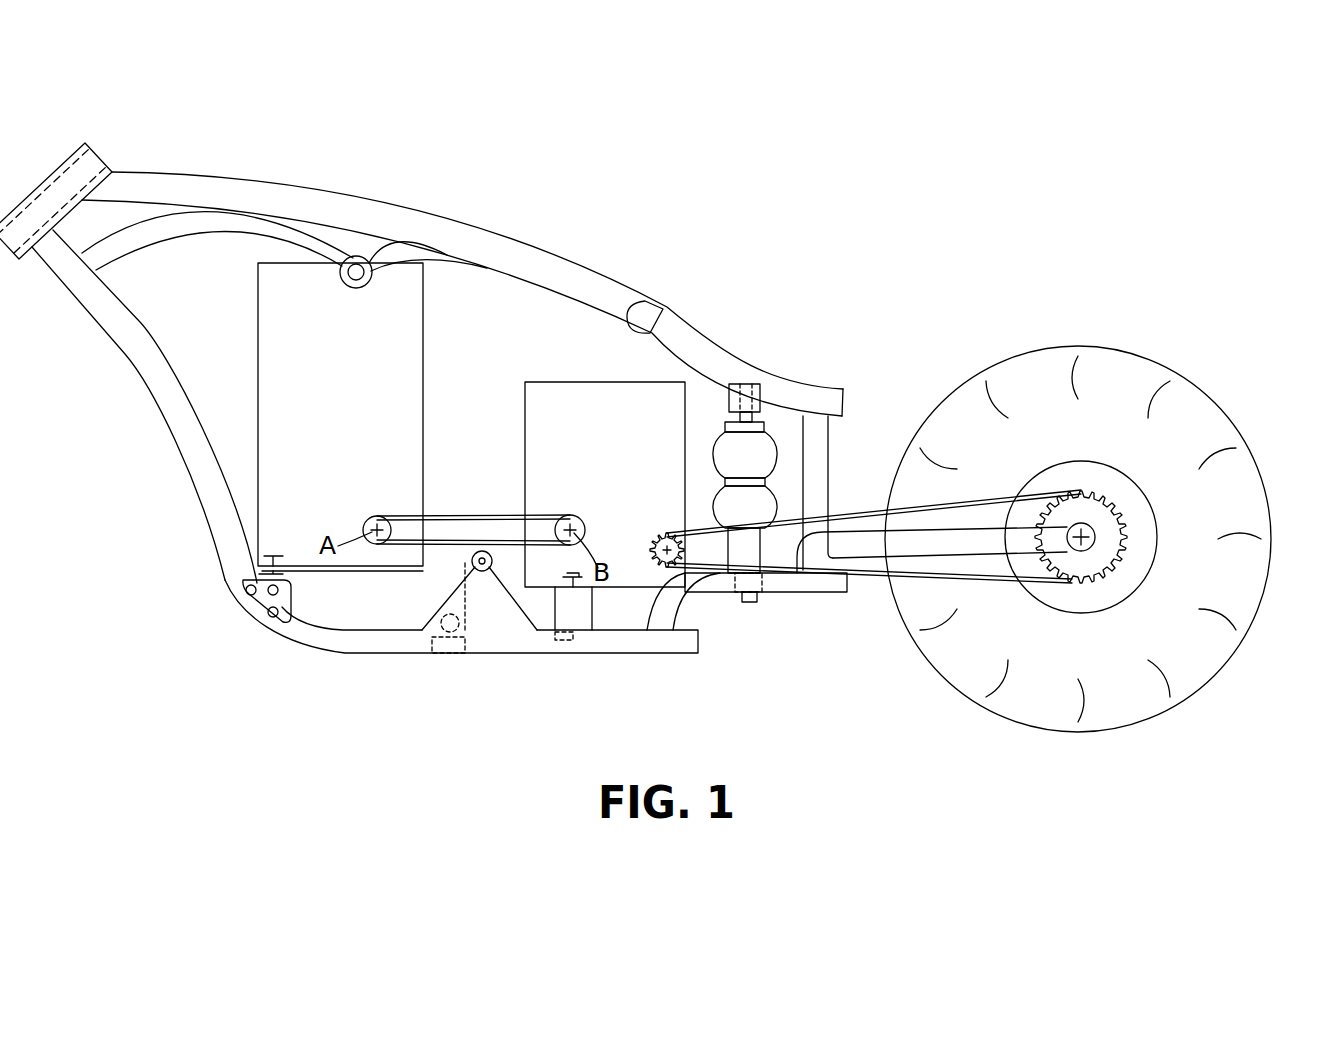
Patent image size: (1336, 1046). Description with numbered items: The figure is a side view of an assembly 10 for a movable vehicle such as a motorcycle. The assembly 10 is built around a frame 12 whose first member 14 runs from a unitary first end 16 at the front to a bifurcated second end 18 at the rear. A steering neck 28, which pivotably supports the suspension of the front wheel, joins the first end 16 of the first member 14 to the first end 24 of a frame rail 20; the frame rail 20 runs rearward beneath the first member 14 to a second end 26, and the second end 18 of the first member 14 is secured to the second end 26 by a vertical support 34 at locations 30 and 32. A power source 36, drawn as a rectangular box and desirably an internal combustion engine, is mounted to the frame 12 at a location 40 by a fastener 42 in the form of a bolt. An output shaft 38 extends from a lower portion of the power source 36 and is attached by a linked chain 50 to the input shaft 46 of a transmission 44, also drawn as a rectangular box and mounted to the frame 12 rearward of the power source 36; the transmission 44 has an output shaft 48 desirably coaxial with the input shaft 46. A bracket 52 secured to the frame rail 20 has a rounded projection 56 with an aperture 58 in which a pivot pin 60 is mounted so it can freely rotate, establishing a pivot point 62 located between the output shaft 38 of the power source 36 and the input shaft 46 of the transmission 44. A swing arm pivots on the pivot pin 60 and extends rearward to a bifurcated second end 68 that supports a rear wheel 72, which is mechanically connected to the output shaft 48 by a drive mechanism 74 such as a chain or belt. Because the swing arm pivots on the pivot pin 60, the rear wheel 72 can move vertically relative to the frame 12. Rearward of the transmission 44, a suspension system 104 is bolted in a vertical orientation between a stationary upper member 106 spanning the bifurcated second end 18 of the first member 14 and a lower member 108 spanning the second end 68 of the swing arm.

The assembly 10 is at (792, 188).
The frame 12 is at (630, 243).
The first member 14 is at (487, 230).
The first end 16 is at (118, 172).
The second end 18 is at (838, 388).
The frame rail 20 is at (386, 661).
The first end 24 is at (44, 262).
The second end 26 is at (848, 582).
The steering neck 28 is at (35, 185).
The location 30 is at (824, 594).
The location 32 is at (808, 412).
The vertical support 34 is at (828, 452).
The power source 36 is at (352, 403).
The output shaft 38 is at (366, 518).
The location 40 is at (368, 277).
The fastener 42 is at (258, 563).
The transmission 44 is at (621, 448).
The input shaft 46 is at (578, 517).
The output shaft 48 is at (676, 535).
The linked chain 50 is at (445, 516).
The bracket 52 is at (448, 596).
The rounded projection 56 is at (472, 562).
The aperture 58 is at (493, 561).
The pivot pin 60 is at (485, 567).
The pivot point 62 is at (586, 530).
The second end 68 is at (1093, 533).
The rear wheel 72 is at (1216, 404).
The drive mechanism 74 is at (845, 516).
The suspension system 104 is at (775, 437).
The upper member 106 is at (767, 382).
The lower member 108 is at (762, 583).